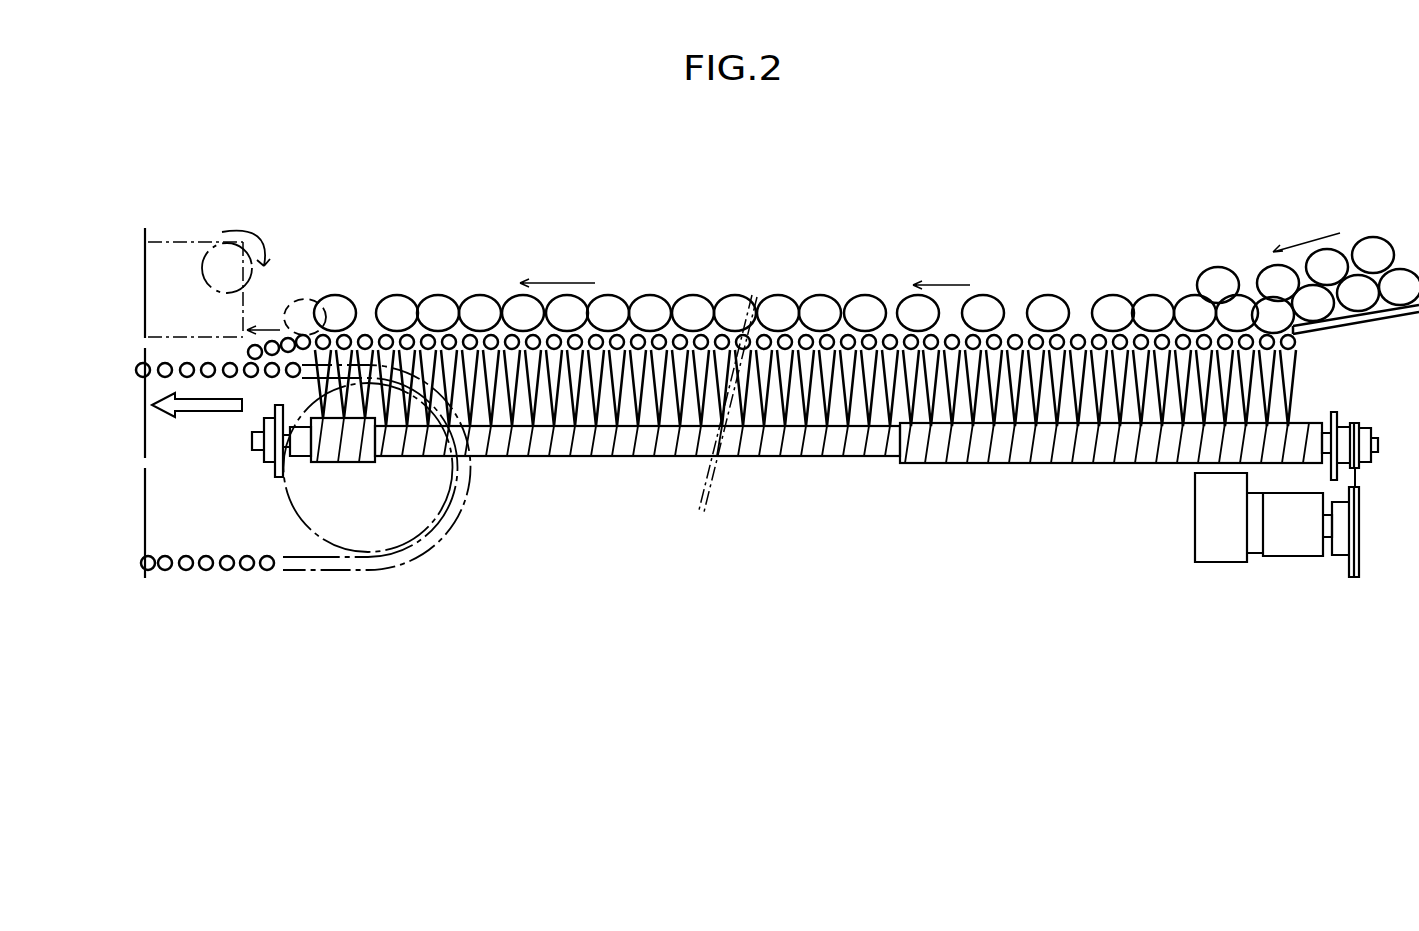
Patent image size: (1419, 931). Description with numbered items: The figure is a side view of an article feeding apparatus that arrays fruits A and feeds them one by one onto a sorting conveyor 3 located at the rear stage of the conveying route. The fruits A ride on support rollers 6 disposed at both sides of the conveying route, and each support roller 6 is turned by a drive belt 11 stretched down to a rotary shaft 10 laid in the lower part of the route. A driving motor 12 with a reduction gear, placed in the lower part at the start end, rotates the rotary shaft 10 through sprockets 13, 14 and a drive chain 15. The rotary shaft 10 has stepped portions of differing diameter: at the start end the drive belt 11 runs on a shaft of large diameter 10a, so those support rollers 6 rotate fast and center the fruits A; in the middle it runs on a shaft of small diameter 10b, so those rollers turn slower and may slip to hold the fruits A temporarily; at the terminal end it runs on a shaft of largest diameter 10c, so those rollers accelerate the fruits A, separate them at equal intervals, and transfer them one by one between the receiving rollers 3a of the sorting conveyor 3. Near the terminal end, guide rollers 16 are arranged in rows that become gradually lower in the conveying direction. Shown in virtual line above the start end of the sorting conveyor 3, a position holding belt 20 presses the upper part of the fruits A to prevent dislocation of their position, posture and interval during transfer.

The position holding belt 20 is at (170, 242).
The receiving rollers 3a is at (200, 364).
The sorting conveyor 3 is at (290, 592).
The guide rollers 16 is at (278, 350).
The support roller 6 is at (424, 340).
The fruits A is at (232, 337).
The rotary shaft 10 is at (812, 494).
The shaft of large diameter 10a is at (1110, 450).
The shaft of small diameter 10b is at (648, 447).
The shaft of largest diameter 10c is at (333, 452).
The drive belt 11 is at (427, 440).
The driving motor 12 is at (1285, 547).
The sprocket 13 is at (1362, 540).
The sprocket 14 is at (1363, 443).
The drive chain 15 is at (1356, 477).